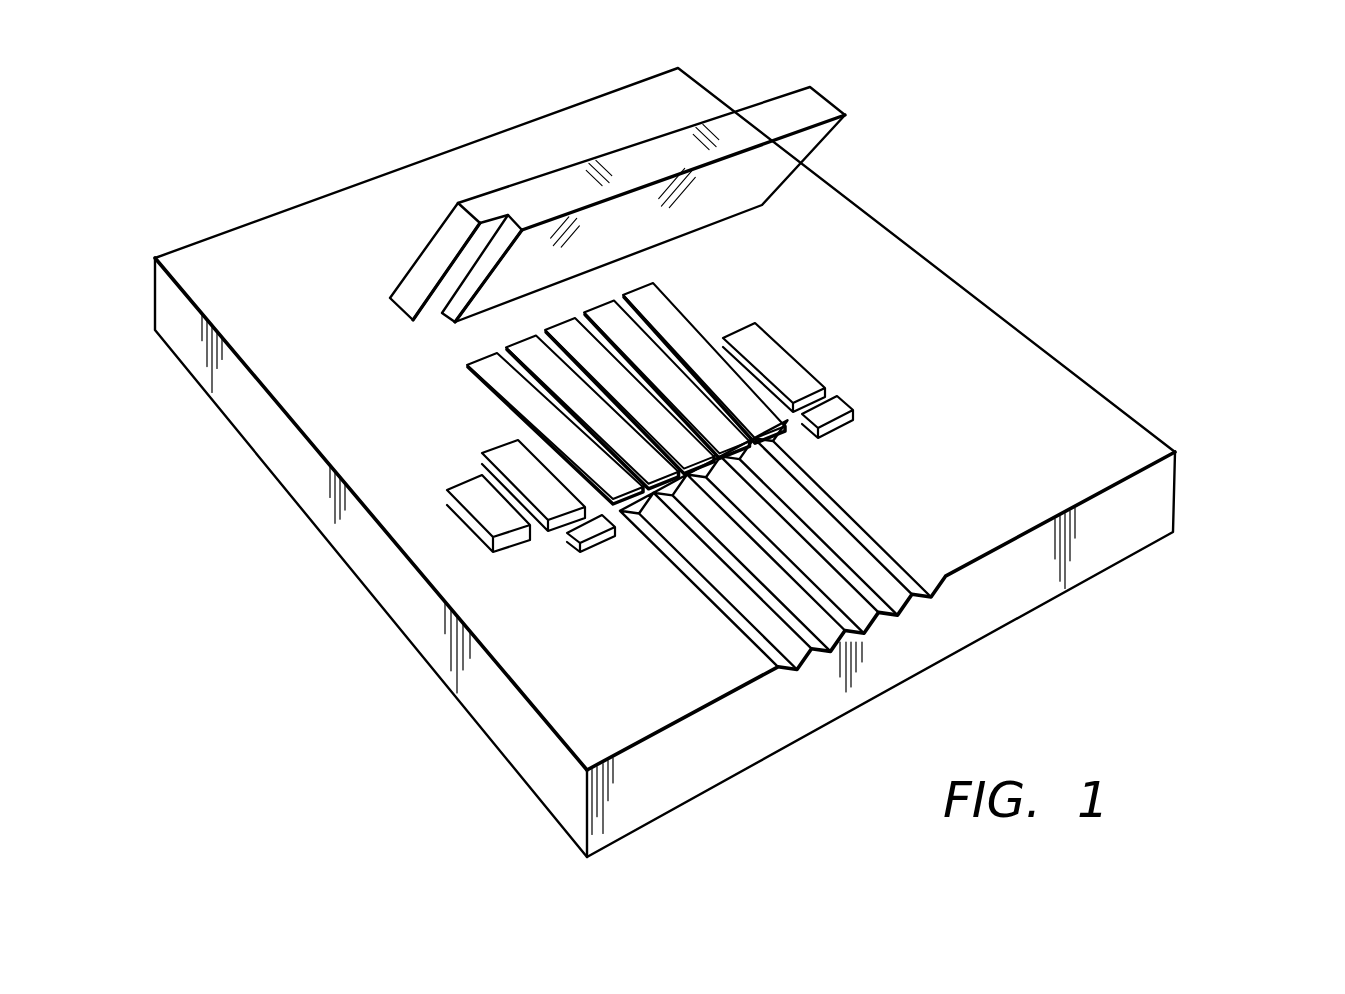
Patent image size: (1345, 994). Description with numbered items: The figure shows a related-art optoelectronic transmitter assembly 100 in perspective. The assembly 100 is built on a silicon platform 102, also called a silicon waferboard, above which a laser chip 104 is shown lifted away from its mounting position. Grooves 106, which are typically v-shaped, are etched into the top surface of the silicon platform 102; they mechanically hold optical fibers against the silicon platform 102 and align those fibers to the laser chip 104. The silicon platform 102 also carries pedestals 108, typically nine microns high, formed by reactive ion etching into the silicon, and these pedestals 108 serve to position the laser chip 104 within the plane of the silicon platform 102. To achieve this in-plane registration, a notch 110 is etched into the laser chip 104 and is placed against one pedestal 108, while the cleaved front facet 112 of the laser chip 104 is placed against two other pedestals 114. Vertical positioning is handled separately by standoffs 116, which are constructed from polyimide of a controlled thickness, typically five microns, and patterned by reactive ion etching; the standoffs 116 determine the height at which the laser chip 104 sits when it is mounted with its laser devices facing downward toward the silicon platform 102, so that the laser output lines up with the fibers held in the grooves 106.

The optoelectronic transmitter assembly 100 is at (1138, 327).
The silicon platform 102 is at (1122, 438).
The laser chip 104 is at (503, 187).
The grooves 106 is at (752, 643).
The pedestals 108 is at (470, 530).
The notch 110 is at (437, 307).
The cleaved front facet 112 is at (793, 113).
The pedestals 114 is at (567, 540).
The standoffs 116 is at (503, 443).